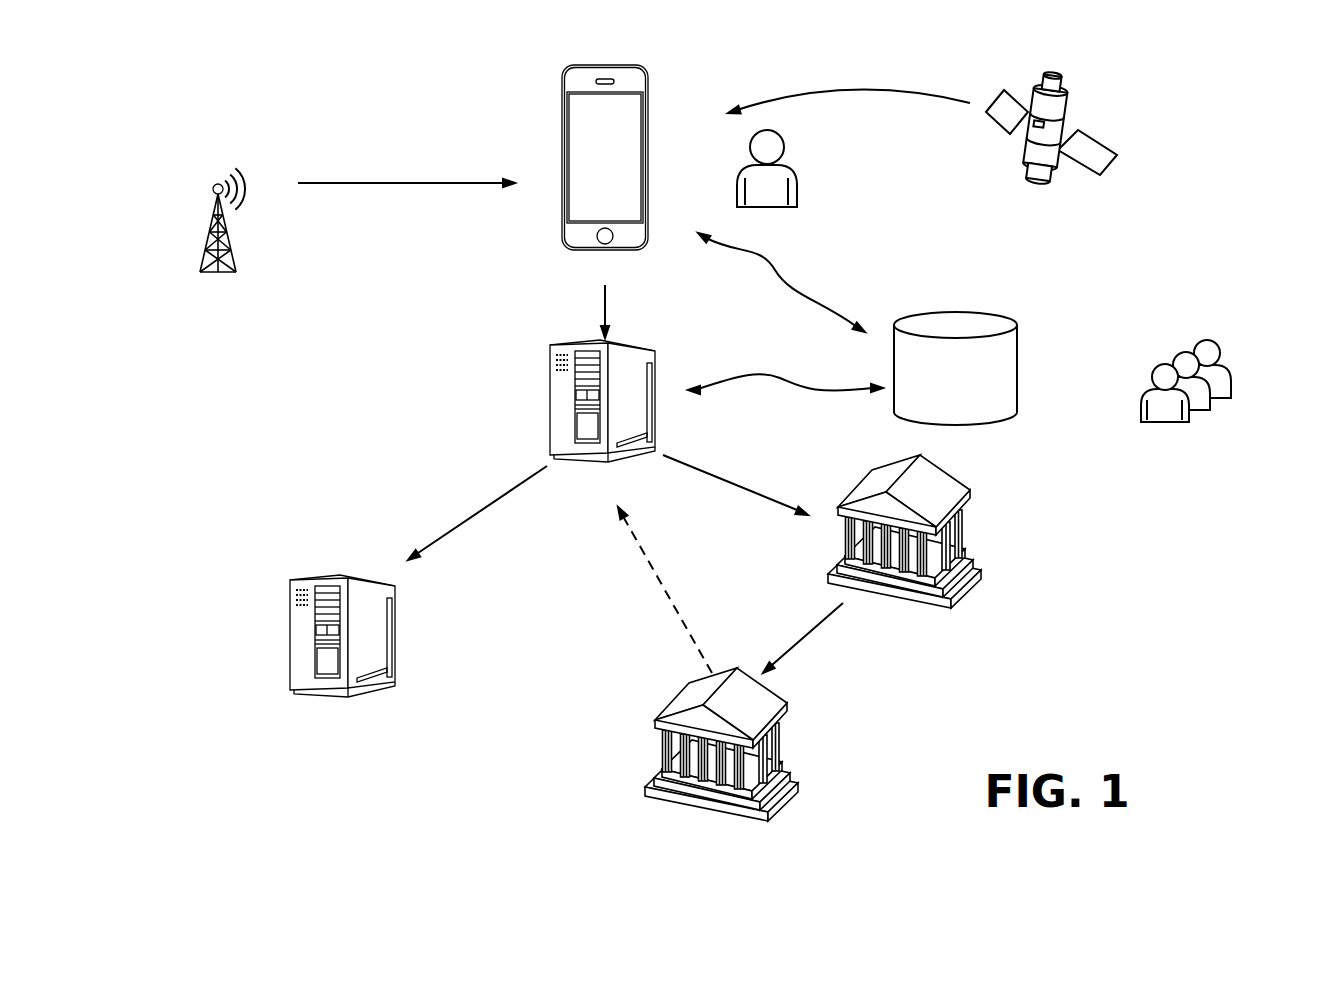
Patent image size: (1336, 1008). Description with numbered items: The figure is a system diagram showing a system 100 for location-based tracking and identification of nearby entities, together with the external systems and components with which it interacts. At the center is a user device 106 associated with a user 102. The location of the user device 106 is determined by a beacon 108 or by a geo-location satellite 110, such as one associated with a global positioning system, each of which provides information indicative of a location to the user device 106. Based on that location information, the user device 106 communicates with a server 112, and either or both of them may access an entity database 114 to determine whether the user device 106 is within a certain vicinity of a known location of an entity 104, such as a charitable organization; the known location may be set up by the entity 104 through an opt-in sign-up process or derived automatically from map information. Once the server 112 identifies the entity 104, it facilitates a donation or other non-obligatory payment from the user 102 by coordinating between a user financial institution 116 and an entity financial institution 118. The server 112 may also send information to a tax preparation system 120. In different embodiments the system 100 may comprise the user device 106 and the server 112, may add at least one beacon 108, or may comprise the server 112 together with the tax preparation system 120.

The system 100 is at (330, 88).
The user 102 is at (800, 165).
The entity 104 is at (1242, 350).
The user device 106 is at (650, 75).
The beacon 108 is at (213, 208).
The geo-location satellite 110 is at (1070, 105).
The server 112 is at (548, 370).
The entity database 114 is at (1018, 357).
The user financial institution 116 is at (963, 480).
The entity financial institution 118 is at (665, 702).
The tax preparation system 120 is at (288, 602).